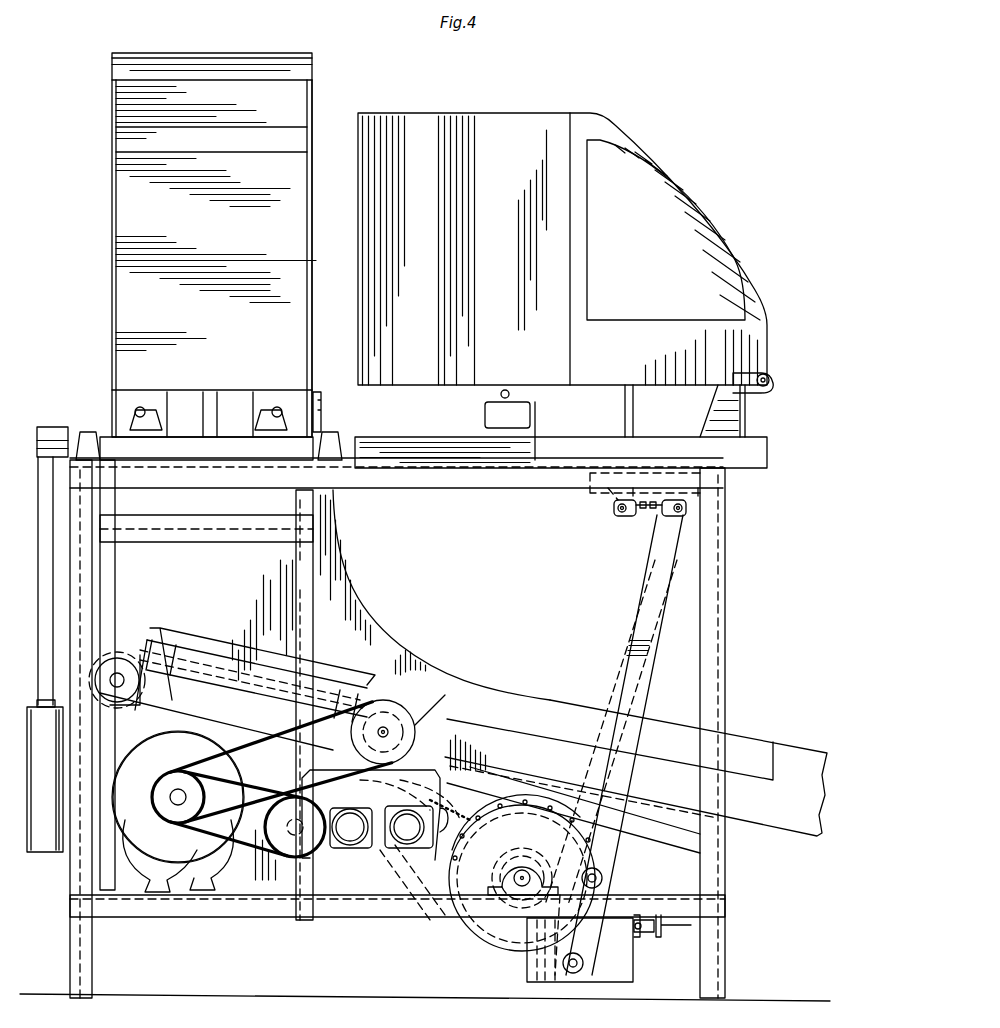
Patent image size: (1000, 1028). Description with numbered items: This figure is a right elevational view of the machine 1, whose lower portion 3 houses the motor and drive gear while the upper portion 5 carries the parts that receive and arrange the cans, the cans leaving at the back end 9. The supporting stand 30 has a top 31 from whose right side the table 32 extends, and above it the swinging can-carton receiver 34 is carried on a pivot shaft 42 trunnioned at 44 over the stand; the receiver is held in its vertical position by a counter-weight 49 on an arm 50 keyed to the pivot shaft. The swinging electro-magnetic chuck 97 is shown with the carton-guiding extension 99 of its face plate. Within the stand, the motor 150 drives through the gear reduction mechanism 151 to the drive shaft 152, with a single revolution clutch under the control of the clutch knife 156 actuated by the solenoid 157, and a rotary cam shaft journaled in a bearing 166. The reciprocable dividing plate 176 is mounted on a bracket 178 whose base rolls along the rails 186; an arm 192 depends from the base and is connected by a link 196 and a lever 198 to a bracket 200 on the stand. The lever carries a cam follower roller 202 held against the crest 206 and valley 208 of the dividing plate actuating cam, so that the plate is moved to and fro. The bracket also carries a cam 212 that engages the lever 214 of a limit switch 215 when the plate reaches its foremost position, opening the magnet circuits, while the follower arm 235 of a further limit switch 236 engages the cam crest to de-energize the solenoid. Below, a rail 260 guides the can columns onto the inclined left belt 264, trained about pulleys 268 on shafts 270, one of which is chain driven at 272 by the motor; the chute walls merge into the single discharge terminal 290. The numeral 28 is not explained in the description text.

The machine 1 is at (573, 233).
The lower portion 3 is at (758, 574).
The upper portion 5 is at (82, 116).
The back end 9 is at (750, 688).
The curved chute 28 is at (362, 609).
The supporting stand 30 is at (736, 626).
The top 31 is at (350, 472).
The table 32 is at (218, 542).
The can-carton receiver 34 is at (323, 101).
The pivot shaft 42 is at (70, 426).
The trunnion 44 is at (88, 432).
The counter-weight 49 is at (46, 852).
The arm 50 is at (44, 626).
The swinging electro-magnetic chuck 97 is at (104, 194).
The carton-guiding extension 99 is at (218, 53).
The motor 150 is at (152, 744).
The gear reduction mechanism 151 is at (362, 888).
The drive shaft 152 is at (510, 876).
The clutch knife 156 is at (554, 878).
The solenoid 157 is at (670, 936).
The bearing 166 is at (582, 952).
The dividing plate 176 is at (485, 113).
The bracket 178 is at (748, 268).
The rails 186 is at (772, 452).
The arm 192 is at (612, 505).
The link 196 is at (655, 517).
The lever 198 is at (632, 656).
The bracket 200 is at (626, 970).
The cam follower roller 202 is at (616, 872).
The crest 206 is at (495, 937).
The valley 208 is at (532, 982).
The cam 212 is at (766, 386).
The lever 214 is at (500, 393).
The limit switch 215 is at (485, 413).
The follower arm 235 is at (470, 922).
The limit switch 236 is at (445, 904).
The rail 260 is at (364, 702).
The left belt 264 is at (117, 680).
The pulleys 268 is at (132, 658).
The shafts 270 is at (178, 683).
The chain drive 272 is at (194, 770).
The discharge terminal 290 is at (786, 835).